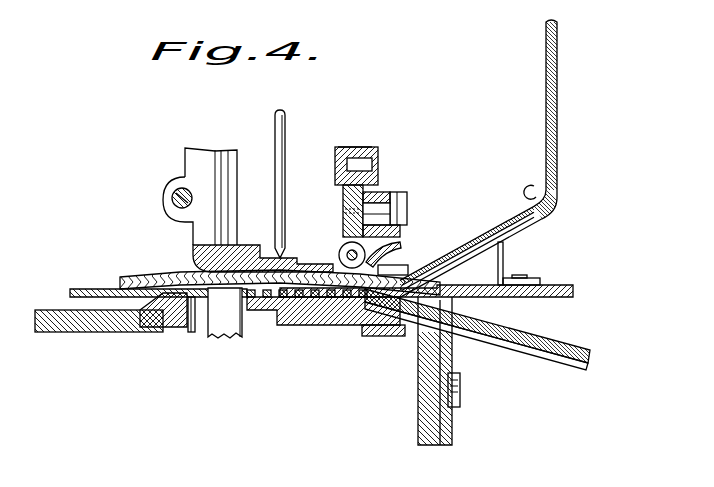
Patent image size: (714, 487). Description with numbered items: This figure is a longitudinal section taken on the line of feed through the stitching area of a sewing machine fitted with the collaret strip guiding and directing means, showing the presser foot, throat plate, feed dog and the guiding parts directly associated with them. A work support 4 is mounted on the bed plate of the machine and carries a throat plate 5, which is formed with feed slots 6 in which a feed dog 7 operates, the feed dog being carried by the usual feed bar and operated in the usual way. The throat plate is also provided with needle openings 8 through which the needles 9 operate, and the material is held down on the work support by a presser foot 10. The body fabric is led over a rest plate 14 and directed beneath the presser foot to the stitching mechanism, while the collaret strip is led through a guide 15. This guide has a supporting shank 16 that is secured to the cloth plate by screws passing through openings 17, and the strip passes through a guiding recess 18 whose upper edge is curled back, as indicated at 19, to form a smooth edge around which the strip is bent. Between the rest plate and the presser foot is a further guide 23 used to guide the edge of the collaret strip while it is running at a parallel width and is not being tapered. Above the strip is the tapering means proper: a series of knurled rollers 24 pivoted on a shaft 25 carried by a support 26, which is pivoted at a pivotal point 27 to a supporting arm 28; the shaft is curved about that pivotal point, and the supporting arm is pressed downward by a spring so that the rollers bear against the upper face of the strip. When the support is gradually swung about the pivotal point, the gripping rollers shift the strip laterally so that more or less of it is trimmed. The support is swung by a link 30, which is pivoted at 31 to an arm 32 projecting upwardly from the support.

The work support 4 is at (45, 332).
The throat plate 5 is at (163, 316).
The feed slots 6 is at (197, 312).
The feed dog 7 is at (242, 330).
The needle openings 8 is at (558, 108).
The needles 9 is at (275, 138).
The presser foot 10 is at (278, 256).
The rest plate 14 is at (510, 348).
The guide 15 is at (530, 223).
The supporting shank 16 is at (485, 271).
The openings 17 is at (568, 358).
The guiding recess 18 is at (543, 212).
The curled edge 19 is at (528, 183).
The guide 23 is at (400, 262).
The rollers 24 is at (347, 254).
The shaft 25 is at (392, 221).
The support 26 is at (343, 188).
The pivotal point 27 is at (430, 229).
The supporting arm 28 is at (365, 192).
The link 30 is at (358, 147).
The pivot 31 is at (378, 152).
The arm 32 is at (350, 146).